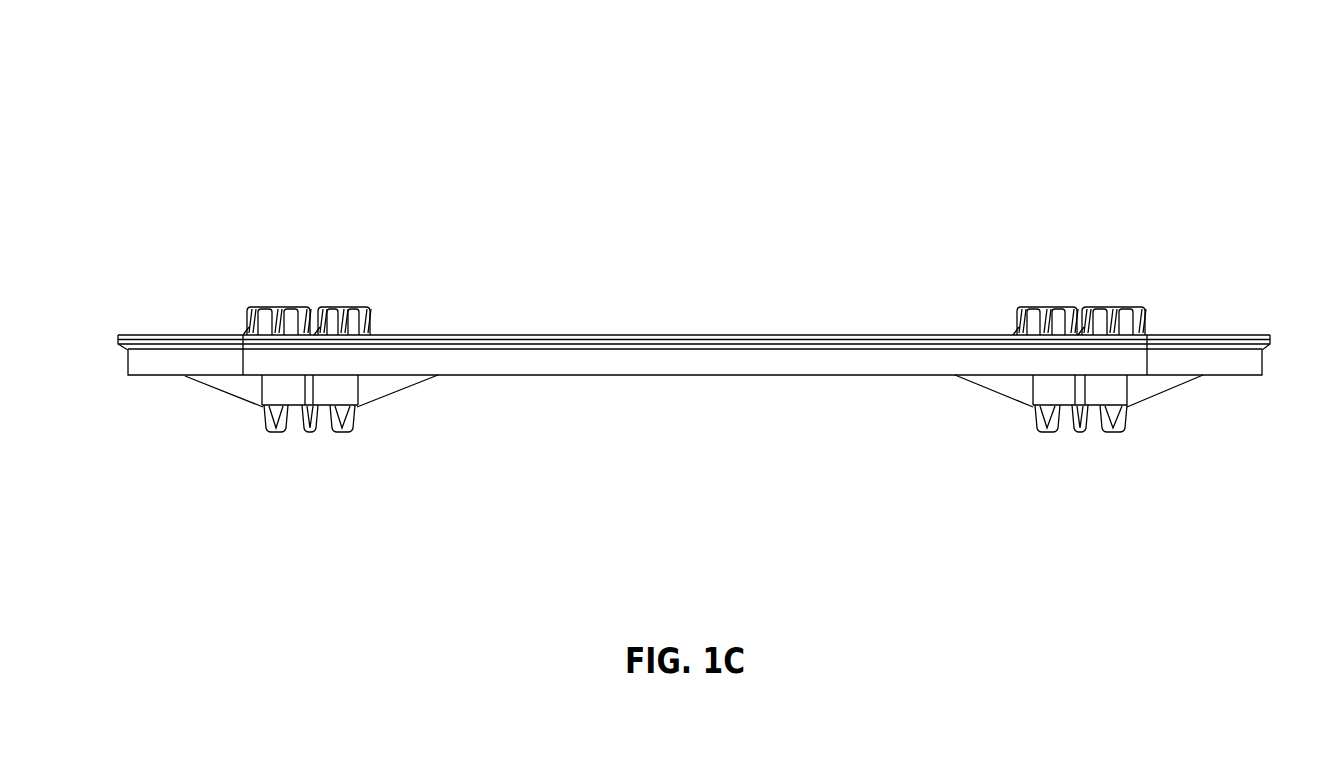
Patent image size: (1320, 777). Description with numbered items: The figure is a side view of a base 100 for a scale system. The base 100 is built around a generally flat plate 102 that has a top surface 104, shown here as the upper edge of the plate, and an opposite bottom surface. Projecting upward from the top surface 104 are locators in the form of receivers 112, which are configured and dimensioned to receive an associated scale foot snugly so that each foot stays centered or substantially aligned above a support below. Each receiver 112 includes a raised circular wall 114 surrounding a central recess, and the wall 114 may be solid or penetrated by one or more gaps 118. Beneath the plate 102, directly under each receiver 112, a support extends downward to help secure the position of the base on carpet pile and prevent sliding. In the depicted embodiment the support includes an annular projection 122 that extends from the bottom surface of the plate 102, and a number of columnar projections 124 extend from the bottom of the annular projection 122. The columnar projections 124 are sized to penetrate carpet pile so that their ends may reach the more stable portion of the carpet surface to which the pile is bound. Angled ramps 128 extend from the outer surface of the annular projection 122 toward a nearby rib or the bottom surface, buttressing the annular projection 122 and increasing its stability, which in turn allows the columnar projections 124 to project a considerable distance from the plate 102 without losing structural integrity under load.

The base 100 is at (214, 143).
The plate 102 is at (1222, 334).
The top surface 104 is at (496, 331).
The receiver 112 is at (1004, 292).
The raised circular wall 114 is at (1144, 309).
The gap 118 is at (1078, 307).
The annular projection 122 is at (1120, 393).
The columnar projection 124 is at (1077, 422).
The angled ramp 128 is at (997, 393).